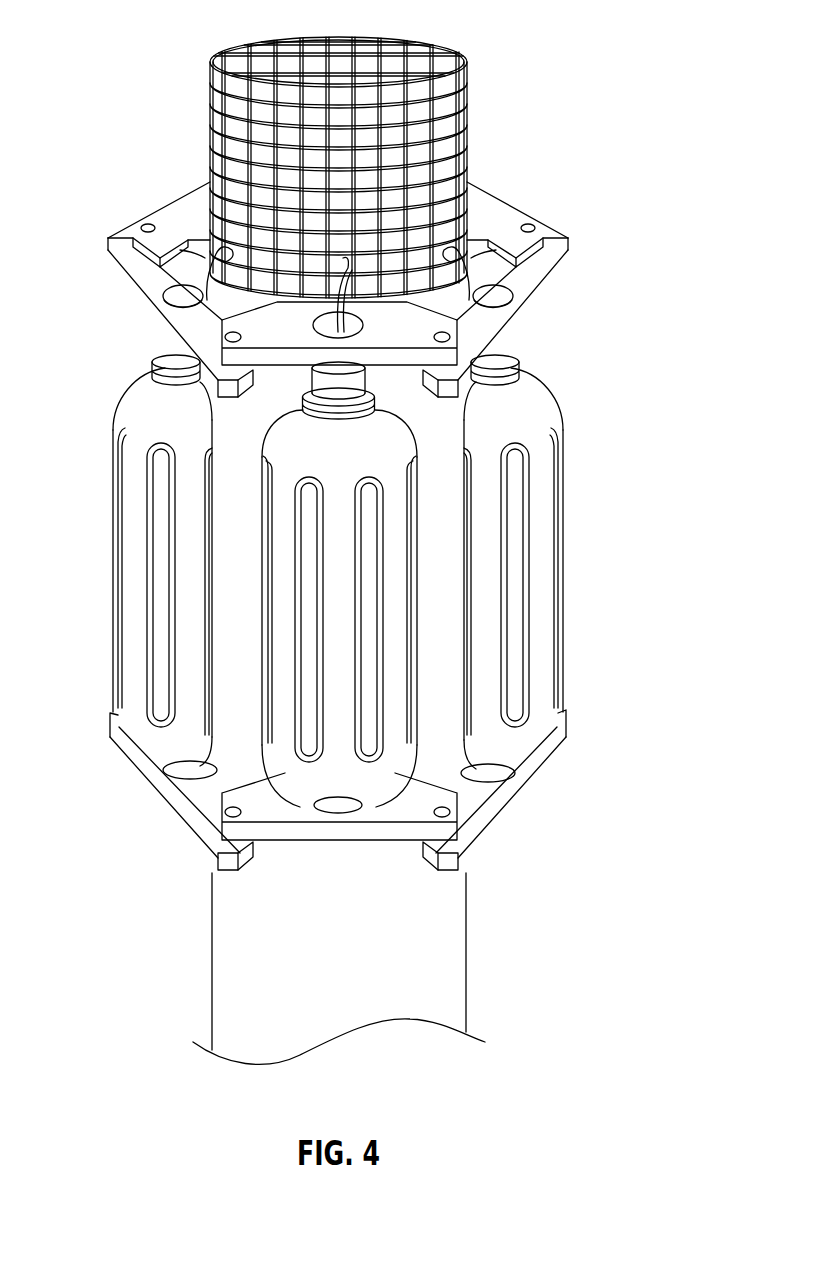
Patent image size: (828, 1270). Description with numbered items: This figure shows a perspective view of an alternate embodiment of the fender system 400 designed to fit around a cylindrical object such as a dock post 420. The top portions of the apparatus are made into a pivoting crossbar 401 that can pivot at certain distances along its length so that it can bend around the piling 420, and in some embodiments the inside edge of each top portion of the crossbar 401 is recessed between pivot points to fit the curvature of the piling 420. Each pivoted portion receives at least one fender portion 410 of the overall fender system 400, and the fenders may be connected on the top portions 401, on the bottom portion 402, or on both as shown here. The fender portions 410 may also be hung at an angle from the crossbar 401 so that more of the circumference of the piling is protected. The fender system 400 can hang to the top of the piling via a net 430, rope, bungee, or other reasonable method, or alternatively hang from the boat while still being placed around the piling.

The fender system 400 is at (569, 903).
The pivoting crossbar 401 is at (172, 190).
The bottom portion 402 is at (155, 808).
The fender portion 410 is at (538, 505).
The dock post 420 is at (470, 148).
The net 430 is at (470, 276).